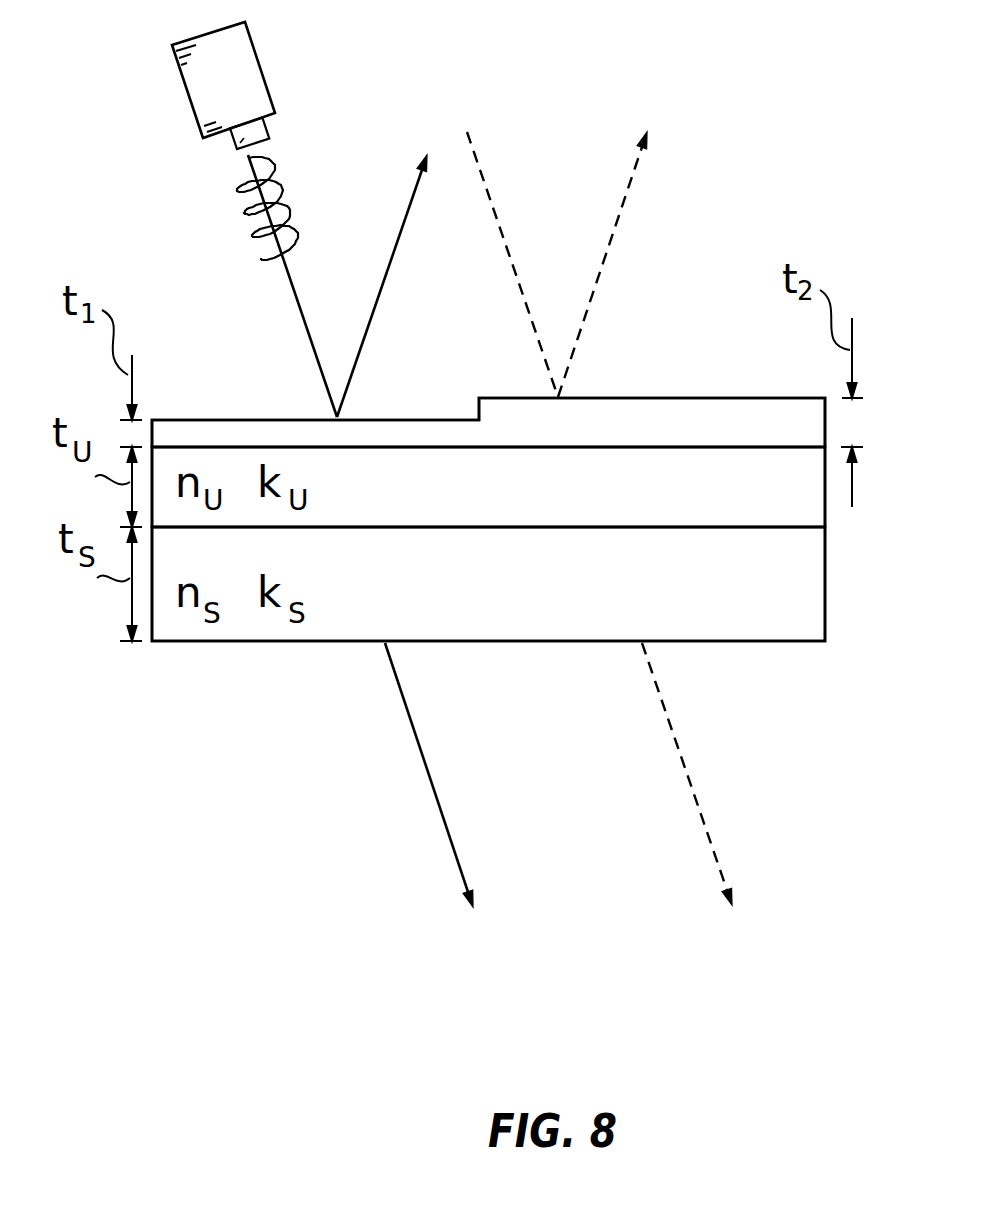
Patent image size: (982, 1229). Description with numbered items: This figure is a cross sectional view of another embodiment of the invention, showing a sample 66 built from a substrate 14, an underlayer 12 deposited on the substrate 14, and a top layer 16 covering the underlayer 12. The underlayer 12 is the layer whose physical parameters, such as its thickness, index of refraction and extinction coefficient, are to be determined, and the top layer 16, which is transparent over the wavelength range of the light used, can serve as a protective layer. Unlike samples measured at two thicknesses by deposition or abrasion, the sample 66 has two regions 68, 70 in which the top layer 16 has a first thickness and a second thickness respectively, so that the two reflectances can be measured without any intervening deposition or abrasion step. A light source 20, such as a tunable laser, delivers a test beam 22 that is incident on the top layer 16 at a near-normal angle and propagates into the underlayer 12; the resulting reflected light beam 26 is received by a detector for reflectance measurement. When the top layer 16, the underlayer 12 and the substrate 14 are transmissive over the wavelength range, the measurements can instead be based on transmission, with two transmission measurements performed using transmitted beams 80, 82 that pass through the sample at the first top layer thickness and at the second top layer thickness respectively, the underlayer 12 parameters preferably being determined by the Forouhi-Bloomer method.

The underlayer 12 is at (770, 500).
The substrate 14 is at (773, 611).
The top layer 16 is at (560, 438).
The light source 20 is at (188, 95).
The test beam 22 is at (285, 253).
The reflected light beam 26 is at (393, 257).
The sample 66 is at (735, 725).
The first region 68 is at (210, 357).
The second region 70 is at (690, 361).
The first transmitted beam 80 is at (420, 742).
The second transmitted beam 82 is at (668, 725).